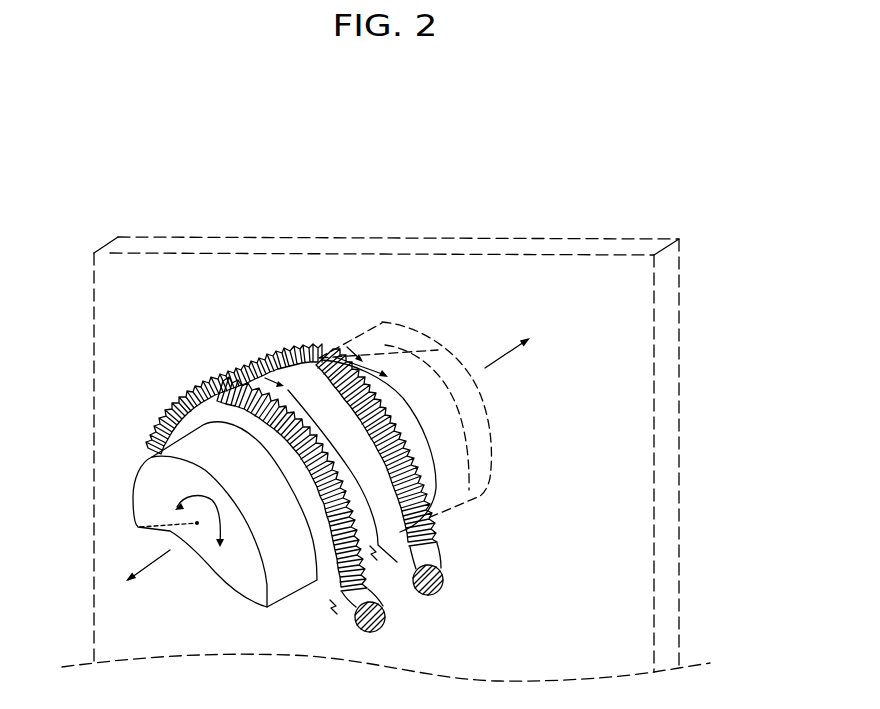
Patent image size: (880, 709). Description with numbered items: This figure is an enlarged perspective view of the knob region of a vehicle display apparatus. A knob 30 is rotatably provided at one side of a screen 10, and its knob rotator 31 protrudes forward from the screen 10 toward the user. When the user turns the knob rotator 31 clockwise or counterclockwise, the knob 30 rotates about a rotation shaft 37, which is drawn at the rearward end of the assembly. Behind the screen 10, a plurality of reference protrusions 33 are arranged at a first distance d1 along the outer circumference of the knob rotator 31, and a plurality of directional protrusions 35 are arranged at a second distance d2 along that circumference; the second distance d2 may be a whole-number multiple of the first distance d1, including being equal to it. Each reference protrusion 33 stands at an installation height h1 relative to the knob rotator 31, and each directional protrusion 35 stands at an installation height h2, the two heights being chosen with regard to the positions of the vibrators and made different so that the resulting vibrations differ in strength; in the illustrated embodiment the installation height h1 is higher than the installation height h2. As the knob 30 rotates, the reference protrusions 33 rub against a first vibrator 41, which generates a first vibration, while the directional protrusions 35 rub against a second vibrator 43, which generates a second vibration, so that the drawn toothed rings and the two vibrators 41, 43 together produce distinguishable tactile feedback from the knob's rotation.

The screen 10 is at (492, 242).
The knob 30 is at (223, 364).
The knob rotator 31 is at (480, 453).
The reference protrusions 33 is at (400, 450).
The directional protrusions 35 is at (423, 537).
The rotation shaft 37 is at (133, 518).
The first vibrator 41 is at (443, 589).
The second vibrator 43 is at (382, 620).
The first distance d1 is at (383, 372).
The second distance d2 is at (272, 378).
The installation height h1 is at (320, 358).
The installation height h2 is at (265, 392).